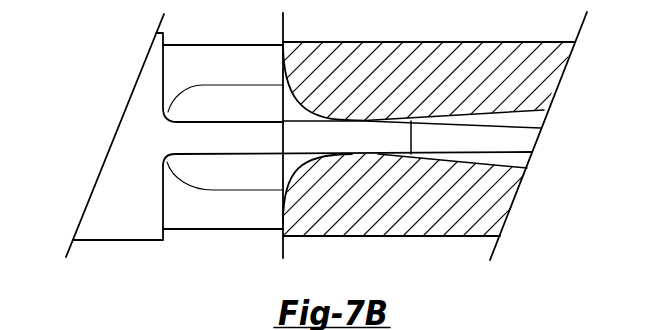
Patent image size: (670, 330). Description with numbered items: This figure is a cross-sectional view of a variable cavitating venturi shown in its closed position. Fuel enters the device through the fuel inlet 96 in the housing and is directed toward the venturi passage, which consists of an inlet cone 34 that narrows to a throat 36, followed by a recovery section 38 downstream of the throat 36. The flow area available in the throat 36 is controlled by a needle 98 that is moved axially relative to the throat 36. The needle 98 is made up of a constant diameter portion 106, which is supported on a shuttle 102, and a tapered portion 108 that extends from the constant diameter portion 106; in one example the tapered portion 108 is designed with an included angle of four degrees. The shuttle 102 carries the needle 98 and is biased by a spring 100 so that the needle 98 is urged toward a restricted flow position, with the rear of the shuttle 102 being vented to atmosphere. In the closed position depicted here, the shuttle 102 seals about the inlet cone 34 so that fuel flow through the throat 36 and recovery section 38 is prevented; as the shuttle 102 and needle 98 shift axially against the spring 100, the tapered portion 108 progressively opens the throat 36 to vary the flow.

The inlet cone 34 is at (301, 98).
The throat 36 is at (360, 121).
The recovery section 38 is at (485, 165).
The needle 98 is at (223, 153).
The shuttle 102 is at (115, 237).
The constant diameter portion 106 is at (365, 144).
The tapered portion 108 is at (500, 138).
The spring 100 is at (435, 326).
The fuel inlet 96 is at (510, 326).